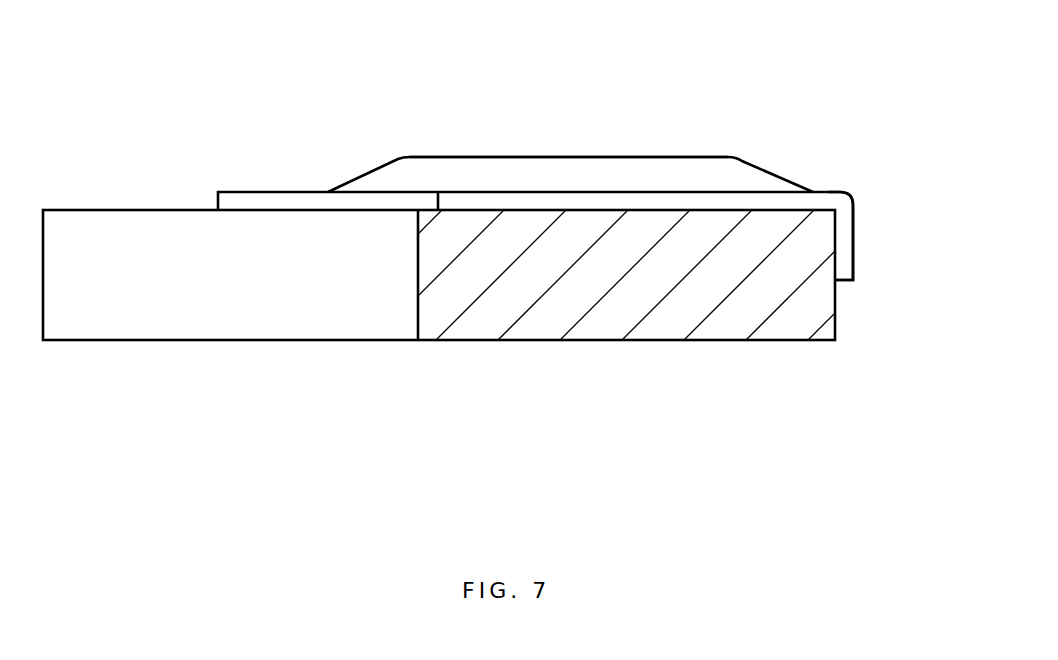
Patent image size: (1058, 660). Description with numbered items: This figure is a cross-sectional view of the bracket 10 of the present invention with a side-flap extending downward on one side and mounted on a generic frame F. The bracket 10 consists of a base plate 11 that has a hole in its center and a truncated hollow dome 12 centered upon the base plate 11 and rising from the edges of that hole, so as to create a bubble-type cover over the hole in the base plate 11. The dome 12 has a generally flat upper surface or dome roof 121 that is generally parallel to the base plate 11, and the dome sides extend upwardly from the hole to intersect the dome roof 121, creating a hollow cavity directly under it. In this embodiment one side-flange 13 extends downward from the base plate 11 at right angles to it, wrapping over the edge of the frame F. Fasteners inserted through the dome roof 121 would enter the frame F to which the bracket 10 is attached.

The bracket 10 is at (559, 152).
The base plate 11 is at (559, 189).
The dome 12 is at (611, 108).
The dome roof 121 is at (660, 150).
The side-flange 13 is at (845, 218).
The frame F is at (165, 237).